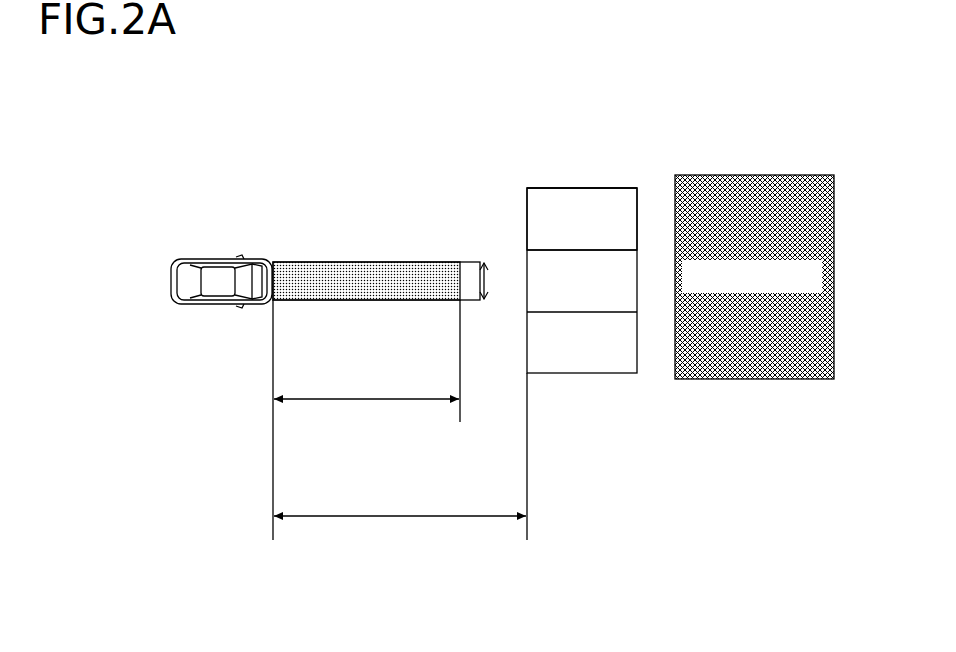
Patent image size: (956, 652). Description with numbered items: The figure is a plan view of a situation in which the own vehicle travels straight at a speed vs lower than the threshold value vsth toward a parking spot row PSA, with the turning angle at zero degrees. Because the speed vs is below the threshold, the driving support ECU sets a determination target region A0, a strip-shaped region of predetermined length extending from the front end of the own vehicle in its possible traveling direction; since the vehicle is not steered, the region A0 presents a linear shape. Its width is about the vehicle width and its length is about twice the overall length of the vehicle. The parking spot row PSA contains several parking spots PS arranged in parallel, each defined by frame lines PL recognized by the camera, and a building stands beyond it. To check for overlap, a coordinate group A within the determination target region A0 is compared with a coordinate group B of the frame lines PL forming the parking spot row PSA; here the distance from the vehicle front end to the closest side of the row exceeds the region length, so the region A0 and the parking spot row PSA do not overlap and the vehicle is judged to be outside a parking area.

The speed vs is at (197, 261).
The determination target region A0 is at (357, 261).
The coordinate group A is at (404, 287).
The parking spot row PSA is at (540, 177).
The frame line PL is at (568, 188).
The parking spot PS is at (613, 202).
The coordinate group B is at (637, 188).